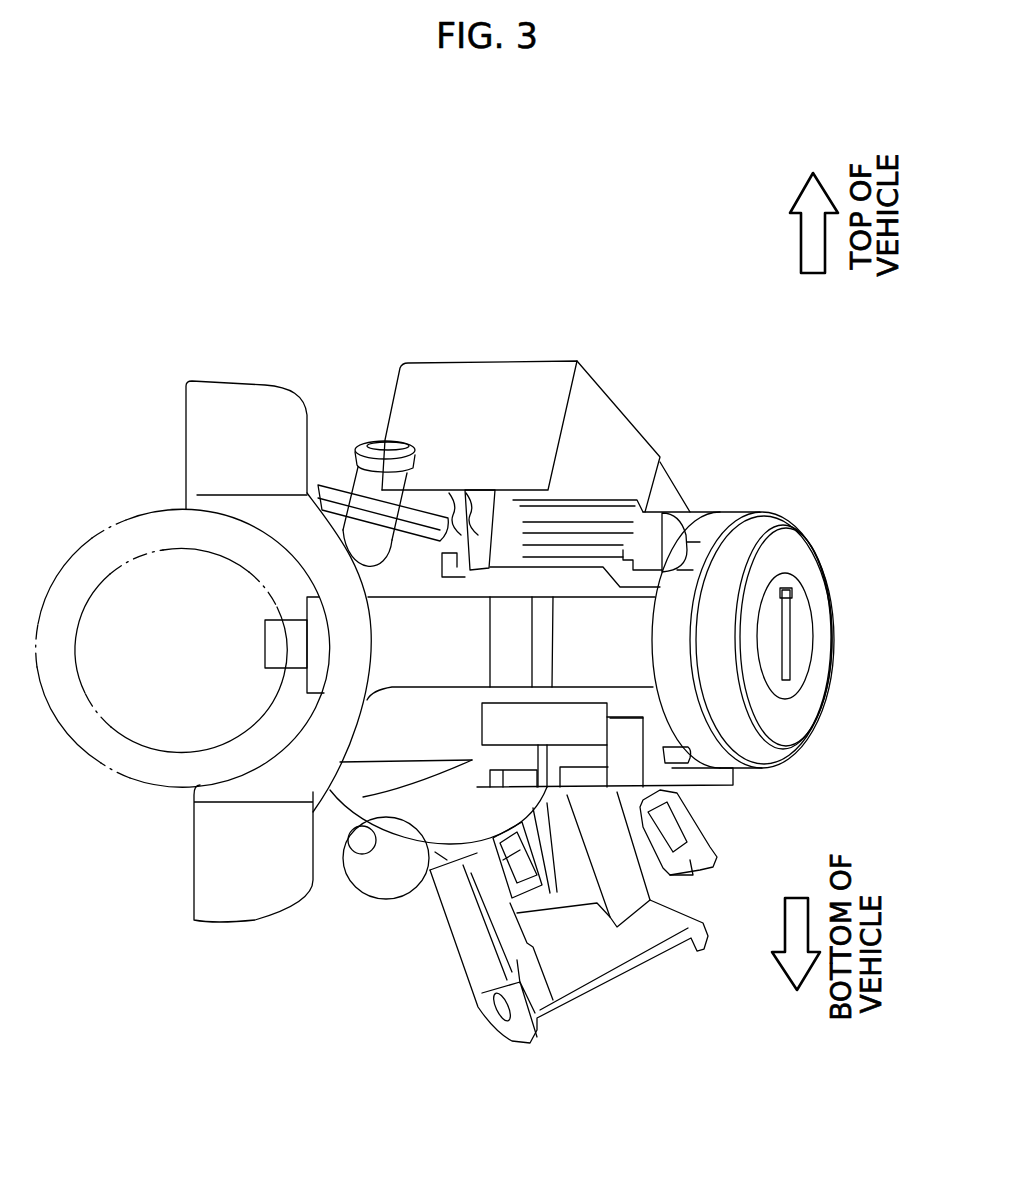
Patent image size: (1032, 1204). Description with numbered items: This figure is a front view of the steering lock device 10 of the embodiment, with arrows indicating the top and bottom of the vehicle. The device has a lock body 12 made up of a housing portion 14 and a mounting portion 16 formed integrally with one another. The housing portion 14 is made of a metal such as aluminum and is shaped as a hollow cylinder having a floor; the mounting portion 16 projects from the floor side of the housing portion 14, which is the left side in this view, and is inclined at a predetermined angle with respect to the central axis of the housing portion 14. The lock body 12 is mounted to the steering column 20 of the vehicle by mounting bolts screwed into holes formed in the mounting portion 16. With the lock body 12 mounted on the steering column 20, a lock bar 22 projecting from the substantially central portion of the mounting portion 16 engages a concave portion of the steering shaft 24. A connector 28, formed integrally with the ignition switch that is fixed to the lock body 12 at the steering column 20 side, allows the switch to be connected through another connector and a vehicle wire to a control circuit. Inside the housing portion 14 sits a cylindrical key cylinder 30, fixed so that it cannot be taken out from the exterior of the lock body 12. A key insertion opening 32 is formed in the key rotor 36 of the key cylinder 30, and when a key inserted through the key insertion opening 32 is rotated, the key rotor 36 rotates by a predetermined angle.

The steering lock device 10 is at (644, 318).
The lock body 12 is at (716, 508).
The housing portion 14 is at (767, 512).
The mounting portion 16 is at (232, 380).
The steering column 20 is at (173, 793).
The lock bar 22 is at (268, 650).
The steering shaft 24 is at (168, 545).
The connector 28 is at (618, 950).
The key cylinder 30 is at (817, 550).
The key insertion opening 32 is at (785, 600).
The key rotor 36 is at (800, 660).